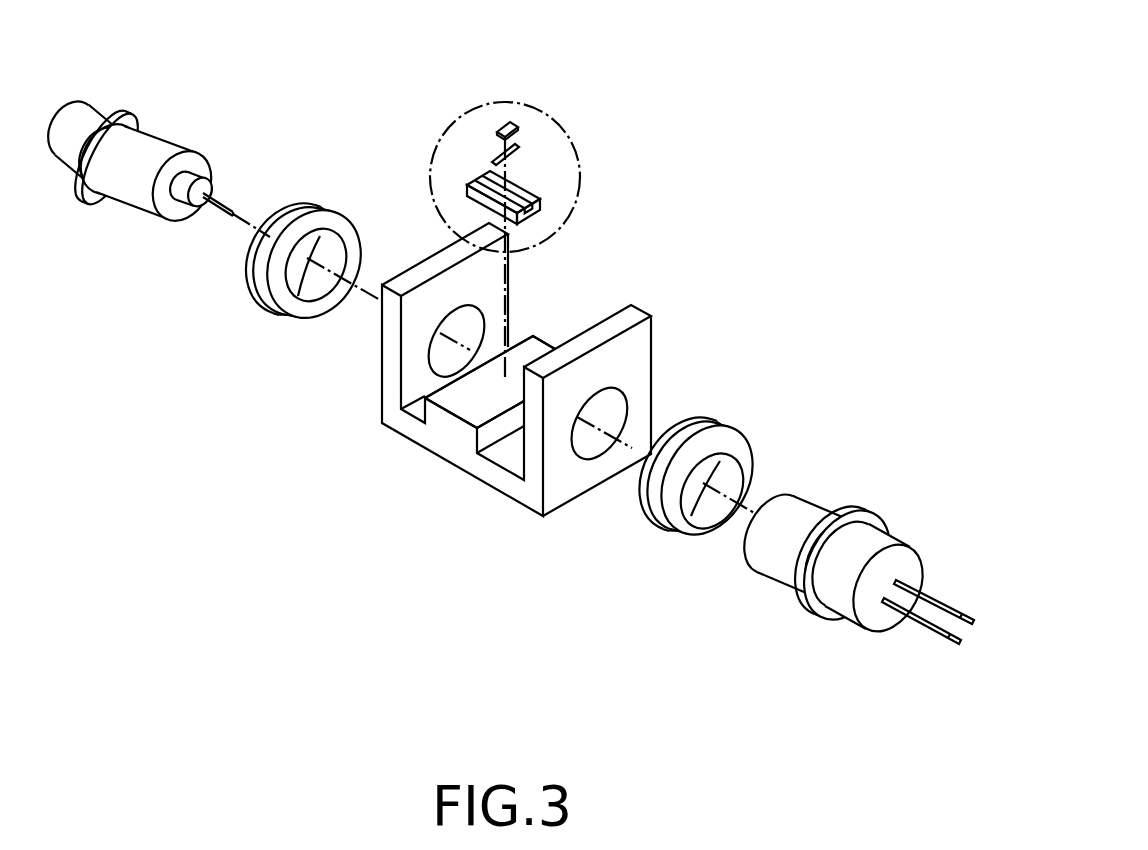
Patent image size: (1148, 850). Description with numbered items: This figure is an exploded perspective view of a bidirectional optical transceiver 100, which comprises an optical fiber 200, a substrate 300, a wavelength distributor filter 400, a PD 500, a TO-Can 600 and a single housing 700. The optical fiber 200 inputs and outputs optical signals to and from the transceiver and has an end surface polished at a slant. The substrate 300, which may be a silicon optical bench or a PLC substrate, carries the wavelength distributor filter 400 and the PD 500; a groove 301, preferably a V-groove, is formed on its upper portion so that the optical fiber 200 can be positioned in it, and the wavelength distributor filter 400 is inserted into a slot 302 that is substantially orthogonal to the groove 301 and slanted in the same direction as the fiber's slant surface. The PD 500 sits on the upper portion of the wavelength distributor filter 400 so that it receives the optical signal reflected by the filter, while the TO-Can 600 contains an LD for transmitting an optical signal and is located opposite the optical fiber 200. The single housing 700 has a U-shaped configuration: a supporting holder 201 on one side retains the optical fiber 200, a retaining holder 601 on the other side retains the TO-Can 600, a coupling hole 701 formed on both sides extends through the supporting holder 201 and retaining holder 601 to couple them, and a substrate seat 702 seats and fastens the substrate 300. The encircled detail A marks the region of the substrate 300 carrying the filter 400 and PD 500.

The bidirectional optical transceiver 100 is at (506, 329).
The optical fiber 200 is at (215, 212).
The supporting holder 201 is at (277, 302).
The substrate 300 is at (508, 163).
The groove 301 is at (487, 179).
The slot 302 is at (494, 203).
The wavelength distributor filter 400 is at (519, 150).
The PD 500 is at (499, 128).
The TO-Can 600 is at (867, 513).
The retaining holder 601 is at (727, 433).
The single housing 700 is at (423, 444).
The coupling hole 701 is at (434, 362).
The substrate seat 702 is at (540, 349).
The detail region A is at (535, 101).